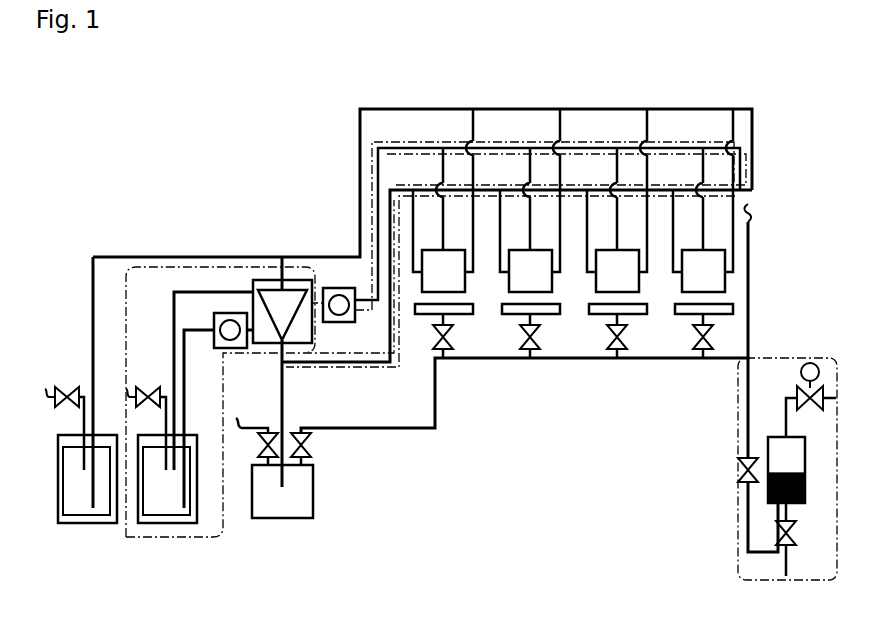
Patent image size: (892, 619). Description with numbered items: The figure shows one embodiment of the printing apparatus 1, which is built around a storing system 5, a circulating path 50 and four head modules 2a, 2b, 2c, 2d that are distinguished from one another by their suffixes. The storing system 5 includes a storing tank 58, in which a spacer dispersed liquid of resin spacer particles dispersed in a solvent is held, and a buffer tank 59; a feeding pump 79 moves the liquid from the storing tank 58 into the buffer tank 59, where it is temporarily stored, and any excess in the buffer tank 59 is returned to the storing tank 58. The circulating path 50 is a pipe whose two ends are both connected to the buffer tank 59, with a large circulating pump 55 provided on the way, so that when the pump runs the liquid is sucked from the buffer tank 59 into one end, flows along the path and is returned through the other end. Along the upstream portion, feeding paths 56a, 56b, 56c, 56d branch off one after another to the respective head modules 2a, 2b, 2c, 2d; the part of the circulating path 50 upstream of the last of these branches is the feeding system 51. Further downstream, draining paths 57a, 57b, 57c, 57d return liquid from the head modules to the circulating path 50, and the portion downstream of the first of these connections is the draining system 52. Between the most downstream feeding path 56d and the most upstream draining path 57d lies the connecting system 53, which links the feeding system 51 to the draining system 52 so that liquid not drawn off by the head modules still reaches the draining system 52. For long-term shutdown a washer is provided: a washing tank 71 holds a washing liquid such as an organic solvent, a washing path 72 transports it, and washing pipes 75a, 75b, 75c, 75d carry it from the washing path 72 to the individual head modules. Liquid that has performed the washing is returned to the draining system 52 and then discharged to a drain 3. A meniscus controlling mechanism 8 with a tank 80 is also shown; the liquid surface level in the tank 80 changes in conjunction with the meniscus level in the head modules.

The printing apparatus 1 is at (46, 70).
The head module 2a is at (449, 291).
The head module 2b is at (536, 291).
The head module 2c is at (623, 291).
The head module 2d is at (709, 291).
The drain 3 is at (280, 518).
The storing system 5 is at (132, 266).
The meniscus controlling mechanism 8 is at (740, 553).
The circulating path 50 is at (812, 125).
The feeding system 51 is at (755, 130).
The draining system 52 is at (737, 205).
The connecting system 53 is at (748, 166).
The large circulating pump 55 is at (338, 287).
The feeding path 56a is at (443, 168).
The feeding path 56b is at (530, 168).
The feeding path 56c is at (617, 168).
The feeding path 56d is at (703, 168).
The draining path 57a is at (413, 196).
The draining path 57b is at (500, 200).
The draining path 57c is at (587, 200).
The draining path 57d is at (674, 200).
The storing tank 58 is at (165, 523).
The buffer tank 59 is at (281, 279).
The washing tank 71 is at (80, 523).
The washing path 72 is at (93, 255).
The washing pipe 75a is at (473, 175).
The washing pipe 75b is at (560, 175).
The washing pipe 75c is at (647, 175).
The washing pipe 75d is at (733, 175).
The feeding pump 79 is at (231, 312).
The tank 80 is at (748, 448).